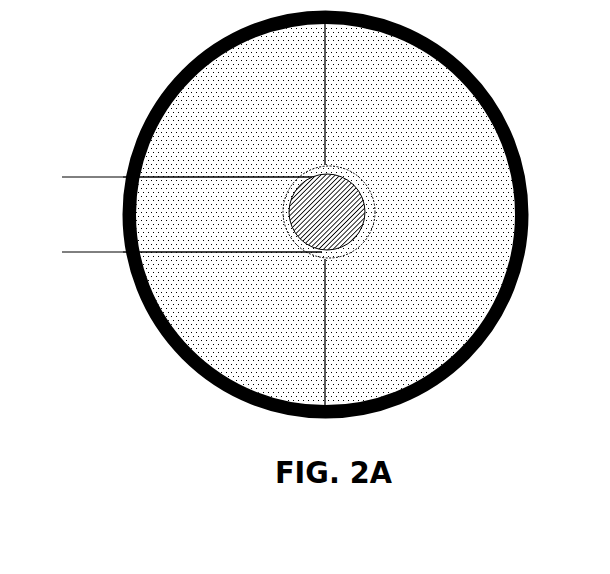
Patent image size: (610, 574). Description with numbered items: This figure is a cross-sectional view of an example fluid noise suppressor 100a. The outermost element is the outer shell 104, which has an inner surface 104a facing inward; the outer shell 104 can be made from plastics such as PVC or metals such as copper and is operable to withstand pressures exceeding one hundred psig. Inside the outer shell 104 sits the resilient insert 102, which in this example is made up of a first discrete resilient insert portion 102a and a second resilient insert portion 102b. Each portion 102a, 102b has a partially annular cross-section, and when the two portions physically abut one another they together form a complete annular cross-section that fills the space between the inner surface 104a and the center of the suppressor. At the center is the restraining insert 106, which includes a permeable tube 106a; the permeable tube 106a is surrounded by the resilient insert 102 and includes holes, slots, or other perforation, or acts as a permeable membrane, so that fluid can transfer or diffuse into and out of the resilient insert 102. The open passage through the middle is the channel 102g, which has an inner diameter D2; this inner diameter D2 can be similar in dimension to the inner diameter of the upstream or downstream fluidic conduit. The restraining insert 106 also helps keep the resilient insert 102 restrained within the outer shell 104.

The fluid noise suppressor 100a is at (468, 400).
The resilient insert 102 is at (244, 72).
The first discrete resilient insert portion 102a is at (195, 340).
The second resilient insert portion 102b is at (474, 304).
The channel 102g is at (353, 210).
The outer shell 104 is at (223, 410).
The inner surface 104a is at (514, 190).
The restraining insert 106 is at (373, 167).
The permeable tube 106a is at (288, 187).
The inner diameter D2 is at (77, 178).